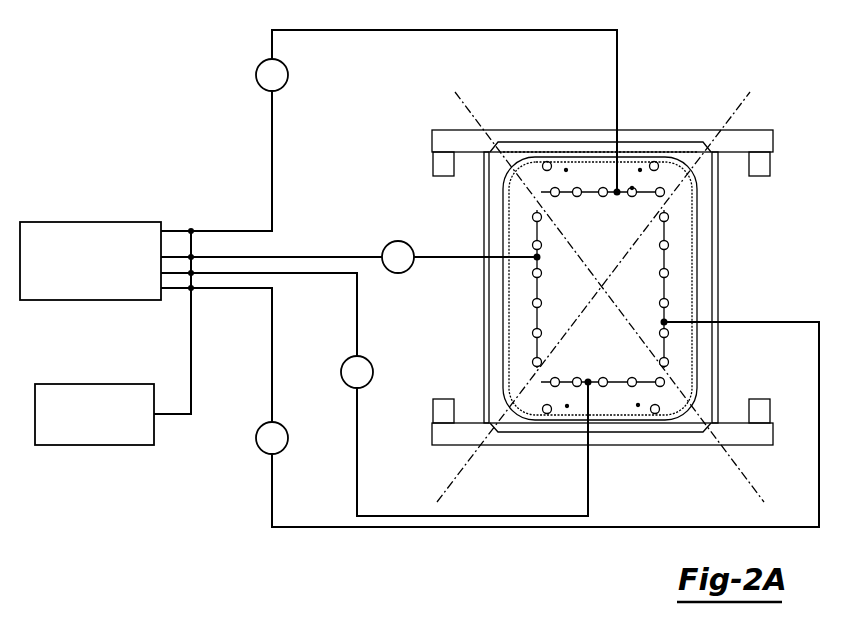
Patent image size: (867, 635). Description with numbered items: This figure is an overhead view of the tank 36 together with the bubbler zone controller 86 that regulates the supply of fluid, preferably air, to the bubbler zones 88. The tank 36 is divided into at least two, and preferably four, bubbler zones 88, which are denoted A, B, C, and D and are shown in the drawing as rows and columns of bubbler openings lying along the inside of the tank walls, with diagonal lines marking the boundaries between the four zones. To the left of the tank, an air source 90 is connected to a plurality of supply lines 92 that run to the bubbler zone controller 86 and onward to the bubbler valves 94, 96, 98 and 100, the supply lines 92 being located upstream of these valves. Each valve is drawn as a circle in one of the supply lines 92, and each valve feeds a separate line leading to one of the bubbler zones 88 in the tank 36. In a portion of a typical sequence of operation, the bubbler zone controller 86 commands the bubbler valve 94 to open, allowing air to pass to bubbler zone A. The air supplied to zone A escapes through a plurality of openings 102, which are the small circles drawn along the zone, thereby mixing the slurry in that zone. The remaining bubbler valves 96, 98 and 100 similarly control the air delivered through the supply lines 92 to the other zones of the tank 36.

The tank 36 is at (707, 380).
The bubbler zone controller 86 is at (87, 222).
The bubbler zones 88 is at (587, 218).
The air source 90 is at (118, 445).
The supply lines 92 is at (272, 172).
The bubbler valve 94 is at (257, 72).
The bubbler valve 96 is at (398, 241).
The bubbler valve 98 is at (374, 374).
The bubbler valve 100 is at (264, 452).
The openings 102 is at (632, 188).